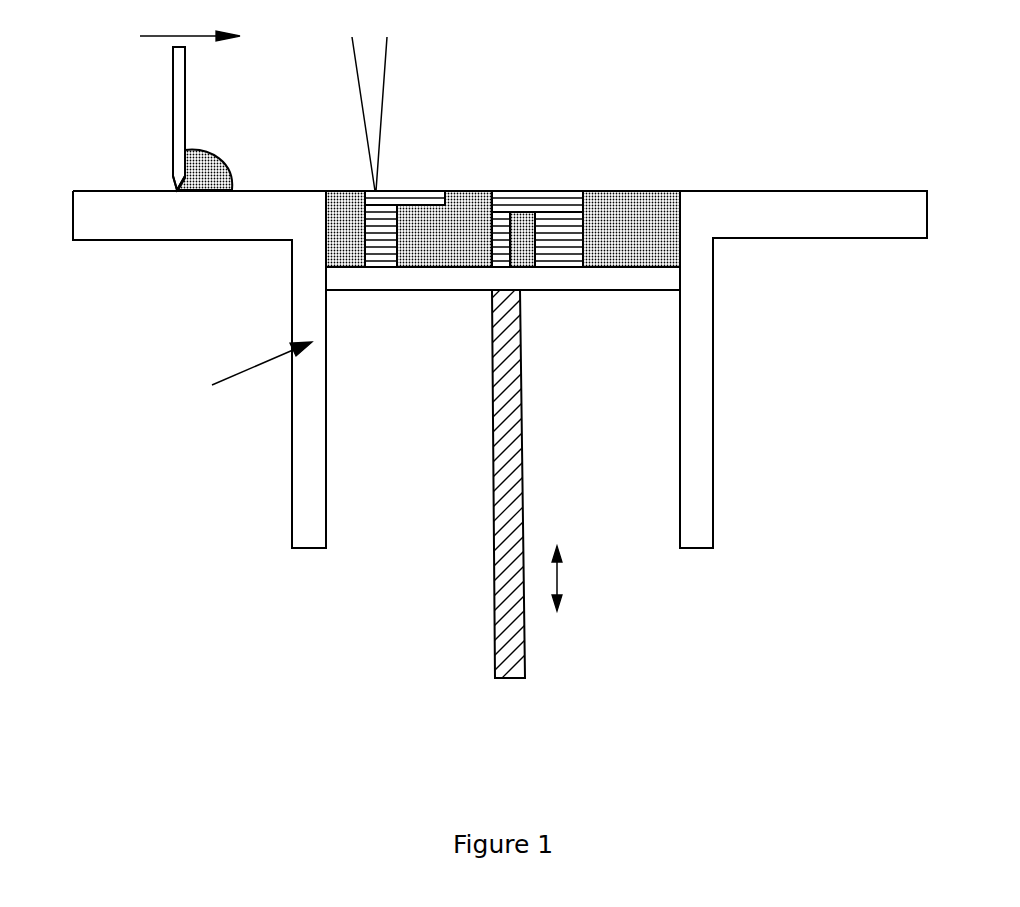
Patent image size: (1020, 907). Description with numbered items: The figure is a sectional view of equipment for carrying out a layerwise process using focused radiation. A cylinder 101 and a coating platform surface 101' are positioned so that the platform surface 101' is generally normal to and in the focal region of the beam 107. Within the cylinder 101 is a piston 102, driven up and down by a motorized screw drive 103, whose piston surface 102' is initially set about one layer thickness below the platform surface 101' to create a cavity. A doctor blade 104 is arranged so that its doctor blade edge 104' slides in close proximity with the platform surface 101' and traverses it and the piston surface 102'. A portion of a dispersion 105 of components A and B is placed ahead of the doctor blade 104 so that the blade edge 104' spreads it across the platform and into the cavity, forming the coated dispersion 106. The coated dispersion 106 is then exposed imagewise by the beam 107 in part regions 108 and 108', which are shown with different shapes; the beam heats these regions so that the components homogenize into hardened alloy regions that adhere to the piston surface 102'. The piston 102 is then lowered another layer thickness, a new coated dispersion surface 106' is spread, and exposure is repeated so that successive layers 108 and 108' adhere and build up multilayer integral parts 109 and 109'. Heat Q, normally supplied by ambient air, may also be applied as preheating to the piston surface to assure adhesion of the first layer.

The cylinder 101 is at (500, 369).
The coating platform surface 101' is at (820, 155).
The piston 102 is at (503, 334).
The piston surface 102' is at (660, 180).
The motorized screw drive 103 is at (533, 503).
The doctor blade 104 is at (141, 109).
The doctor blade edge 104' is at (125, 152).
The dispersion 105 is at (208, 167).
The coated dispersion 106 is at (631, 194).
The coated dispersion surface 106' is at (631, 137).
The beam 107 is at (375, 80).
The part region 108 is at (416, 160).
The part region 108' is at (540, 167).
The integral part 109 is at (342, 198).
The integral part 109' is at (518, 207).
The heat Q is at (251, 373).